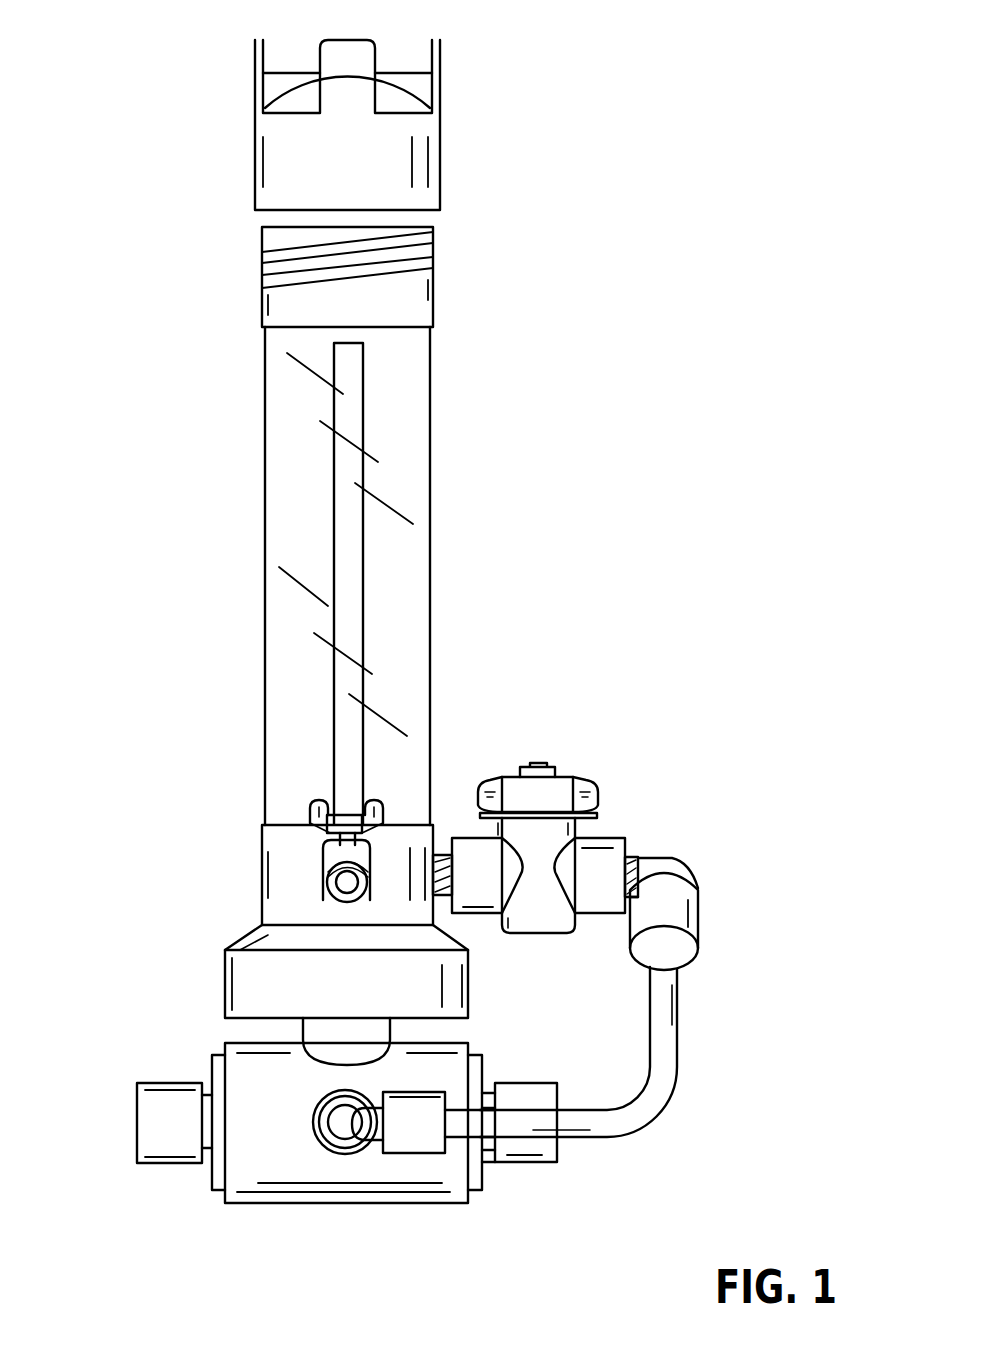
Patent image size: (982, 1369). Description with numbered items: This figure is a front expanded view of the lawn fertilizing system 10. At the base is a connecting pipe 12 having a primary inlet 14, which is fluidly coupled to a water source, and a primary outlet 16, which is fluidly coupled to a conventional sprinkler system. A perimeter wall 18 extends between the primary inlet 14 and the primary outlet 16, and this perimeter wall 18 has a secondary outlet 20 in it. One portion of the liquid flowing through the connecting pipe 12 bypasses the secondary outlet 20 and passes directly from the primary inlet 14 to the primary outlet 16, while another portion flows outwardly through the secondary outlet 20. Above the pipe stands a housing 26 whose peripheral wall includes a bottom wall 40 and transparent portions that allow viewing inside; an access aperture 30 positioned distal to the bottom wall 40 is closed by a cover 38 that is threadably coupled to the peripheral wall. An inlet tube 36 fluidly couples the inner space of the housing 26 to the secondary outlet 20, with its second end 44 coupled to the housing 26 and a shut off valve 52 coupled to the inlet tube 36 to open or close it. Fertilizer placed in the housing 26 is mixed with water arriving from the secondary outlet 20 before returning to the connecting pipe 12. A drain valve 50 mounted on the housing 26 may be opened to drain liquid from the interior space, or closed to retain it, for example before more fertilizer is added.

The lawn fertilizing system 10 is at (150, 763).
The connecting pipe 12 is at (217, 1203).
The primary inlet 14 is at (558, 1150).
The primary outlet 16 is at (134, 1097).
The perimeter wall 18 is at (377, 1165).
The secondary outlet 20 is at (322, 1153).
The housing 26 is at (225, 948).
The access aperture 30 is at (282, 222).
The inlet tube 36 is at (674, 1012).
The cover 38 is at (437, 100).
The bottom wall 40 is at (450, 1024).
The second end 44 is at (436, 852).
The drain valve 50 is at (328, 827).
The shut off valve 52 is at (559, 788).